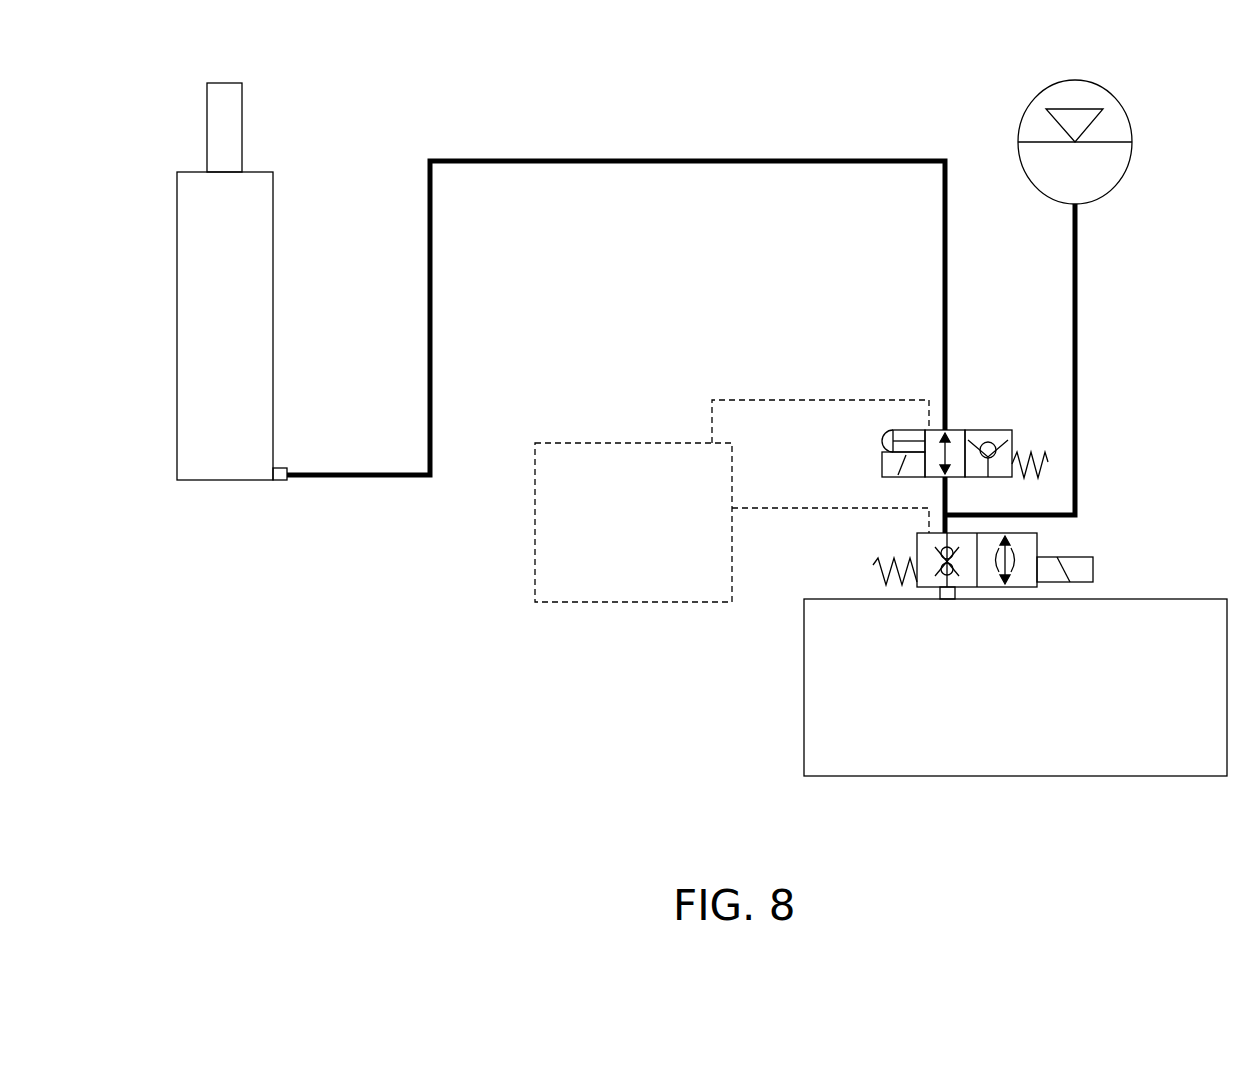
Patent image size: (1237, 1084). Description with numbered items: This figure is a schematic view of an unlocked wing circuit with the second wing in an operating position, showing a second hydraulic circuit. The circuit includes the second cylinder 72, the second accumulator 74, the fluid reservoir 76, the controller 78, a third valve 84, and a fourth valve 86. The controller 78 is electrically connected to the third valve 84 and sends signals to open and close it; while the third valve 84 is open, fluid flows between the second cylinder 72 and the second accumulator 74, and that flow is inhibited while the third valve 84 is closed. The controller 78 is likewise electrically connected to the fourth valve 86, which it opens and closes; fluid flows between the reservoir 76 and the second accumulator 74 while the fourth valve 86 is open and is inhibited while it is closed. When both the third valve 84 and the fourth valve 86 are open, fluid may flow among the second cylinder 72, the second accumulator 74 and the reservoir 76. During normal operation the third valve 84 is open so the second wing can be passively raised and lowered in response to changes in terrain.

The second cylinder 72 is at (262, 238).
The second accumulator 74 is at (1115, 167).
The fluid reservoir 76 is at (1031, 701).
The controller 78 is at (650, 535).
The third valve 84 is at (1033, 445).
The fourth valve 86 is at (1117, 575).